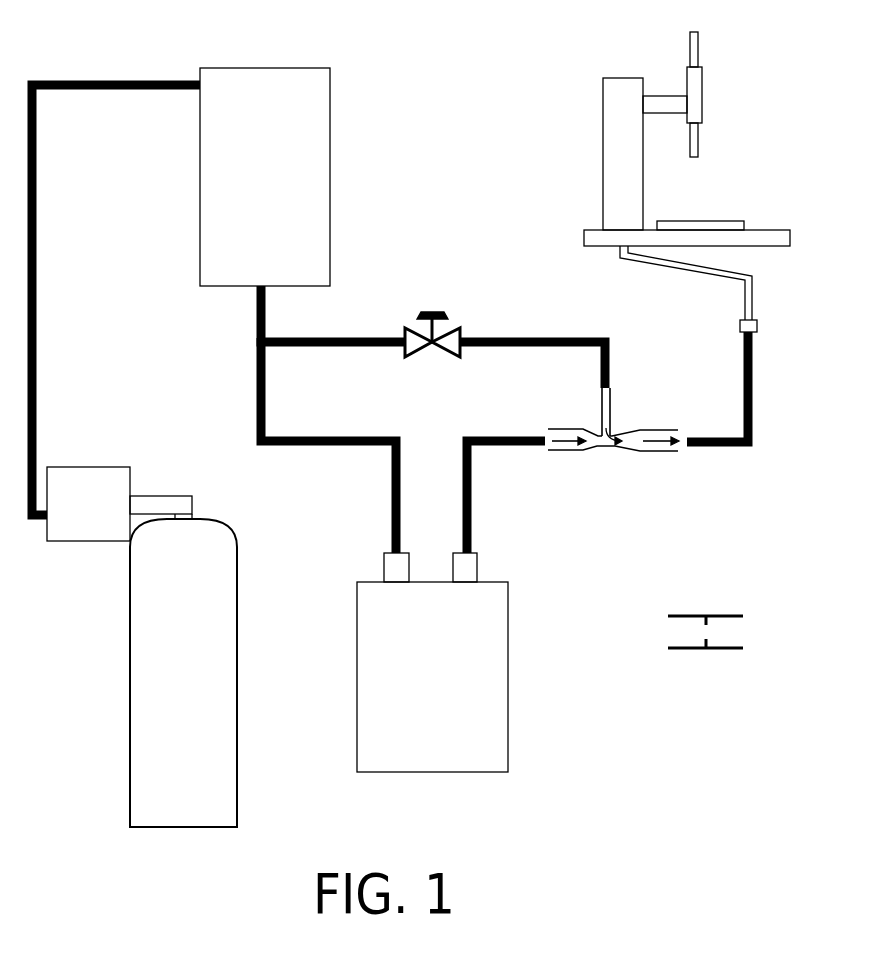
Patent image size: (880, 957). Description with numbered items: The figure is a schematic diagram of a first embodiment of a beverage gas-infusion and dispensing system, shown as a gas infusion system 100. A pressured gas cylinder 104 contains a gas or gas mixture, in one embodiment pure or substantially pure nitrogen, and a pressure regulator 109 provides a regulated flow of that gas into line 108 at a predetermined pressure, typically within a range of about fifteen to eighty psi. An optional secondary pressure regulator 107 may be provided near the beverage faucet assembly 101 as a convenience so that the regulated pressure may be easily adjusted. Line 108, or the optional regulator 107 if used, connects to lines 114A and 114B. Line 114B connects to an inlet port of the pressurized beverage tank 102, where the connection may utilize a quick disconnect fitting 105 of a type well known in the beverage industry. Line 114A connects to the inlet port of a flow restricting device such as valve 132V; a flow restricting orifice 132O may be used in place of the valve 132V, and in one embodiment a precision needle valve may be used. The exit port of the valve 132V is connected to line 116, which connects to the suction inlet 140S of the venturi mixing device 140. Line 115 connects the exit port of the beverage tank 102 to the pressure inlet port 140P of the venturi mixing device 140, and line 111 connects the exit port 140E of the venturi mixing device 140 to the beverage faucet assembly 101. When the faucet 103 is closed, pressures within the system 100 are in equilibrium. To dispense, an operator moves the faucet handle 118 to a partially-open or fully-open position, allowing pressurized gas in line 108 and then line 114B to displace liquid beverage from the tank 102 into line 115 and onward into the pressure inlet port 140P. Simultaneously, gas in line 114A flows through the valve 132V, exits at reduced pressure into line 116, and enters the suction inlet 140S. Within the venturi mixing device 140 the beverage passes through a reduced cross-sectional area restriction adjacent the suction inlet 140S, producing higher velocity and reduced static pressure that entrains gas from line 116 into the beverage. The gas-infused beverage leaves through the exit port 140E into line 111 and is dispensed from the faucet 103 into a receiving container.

The gas infusion system 100 is at (433, 82).
The beverage faucet assembly 101 is at (603, 134).
The pressurized beverage tank 102 is at (508, 670).
The faucet 103 is at (705, 108).
The pressured gas cylinder 104 is at (130, 615).
The quick disconnect fitting 105 is at (384, 562).
The optional secondary pressure regulator 107 is at (200, 193).
The line 108 is at (36, 262).
The pressure regulator 109 is at (57, 467).
The line 111 is at (753, 341).
The line 114A is at (288, 337).
The line 114B is at (312, 435).
The line 115 is at (500, 435).
The line 116 is at (523, 337).
The faucet handle 118 is at (700, 40).
The valve 132V is at (434, 313).
The flow restricting orifice 132O is at (717, 648).
The venturi mixing device 140 is at (629, 464).
The pressure inlet port 140P is at (558, 450).
The suction inlet 140S is at (612, 396).
The exit port 140E is at (672, 451).